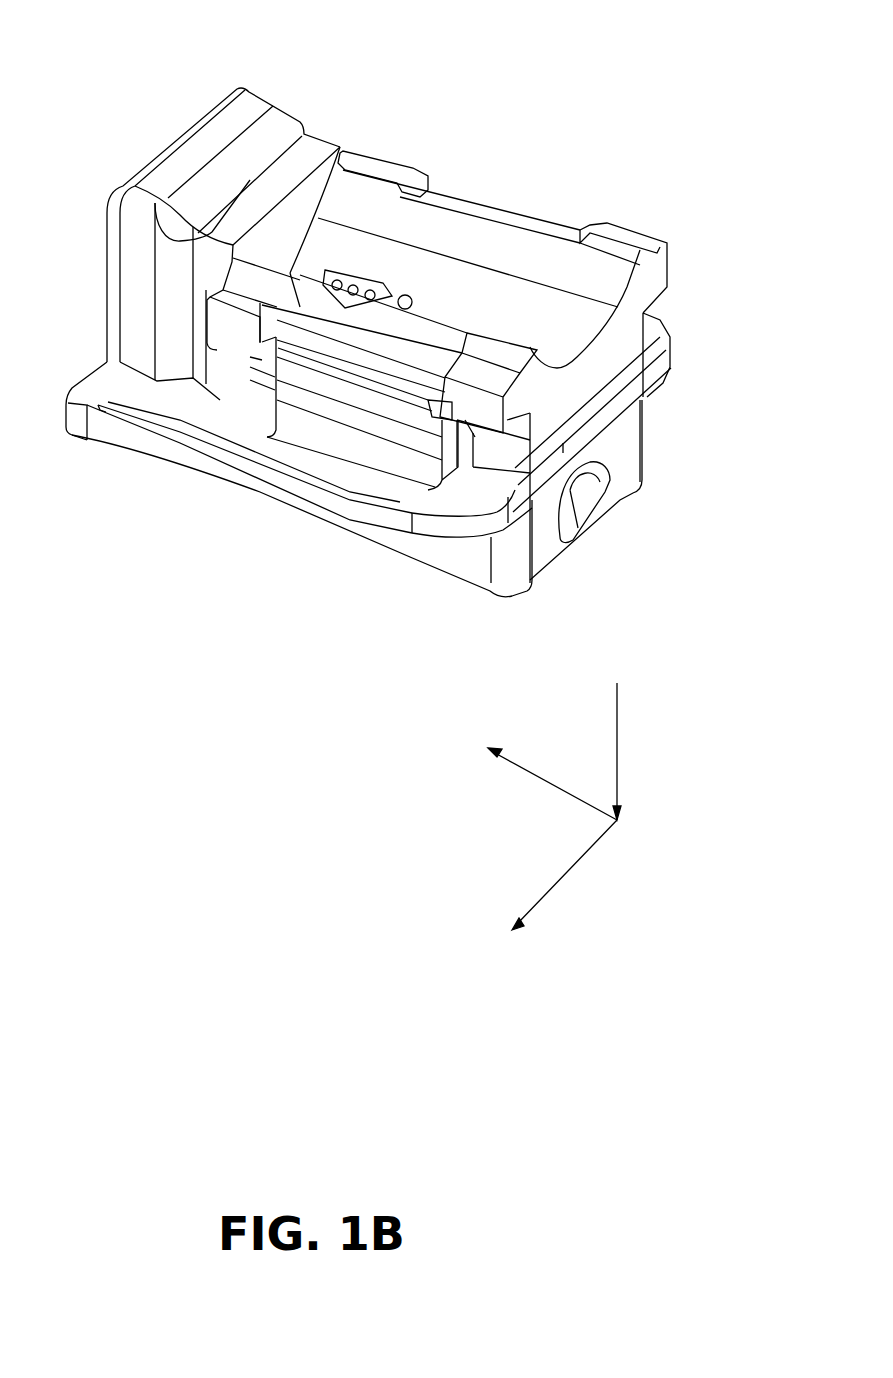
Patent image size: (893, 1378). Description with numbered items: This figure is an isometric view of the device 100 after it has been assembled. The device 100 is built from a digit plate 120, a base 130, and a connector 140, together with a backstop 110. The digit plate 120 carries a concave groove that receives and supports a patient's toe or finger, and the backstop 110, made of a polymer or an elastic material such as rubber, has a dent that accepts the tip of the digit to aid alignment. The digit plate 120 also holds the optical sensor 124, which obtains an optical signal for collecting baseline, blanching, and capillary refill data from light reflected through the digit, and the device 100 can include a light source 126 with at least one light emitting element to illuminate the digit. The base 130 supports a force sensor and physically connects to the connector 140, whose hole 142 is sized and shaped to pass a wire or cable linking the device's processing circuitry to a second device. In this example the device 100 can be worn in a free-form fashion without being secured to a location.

The device 100 is at (683, 66).
The backstop 110 is at (324, 127).
The digit plate 120 is at (679, 224).
The optical sensor 124 is at (353, 277).
The light source 126 is at (412, 295).
The base 130 is at (131, 467).
The connector 140 is at (431, 594).
The hole 142 is at (583, 503).